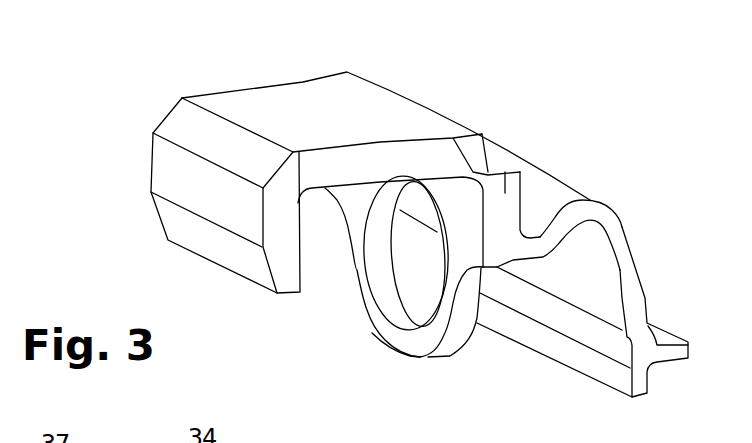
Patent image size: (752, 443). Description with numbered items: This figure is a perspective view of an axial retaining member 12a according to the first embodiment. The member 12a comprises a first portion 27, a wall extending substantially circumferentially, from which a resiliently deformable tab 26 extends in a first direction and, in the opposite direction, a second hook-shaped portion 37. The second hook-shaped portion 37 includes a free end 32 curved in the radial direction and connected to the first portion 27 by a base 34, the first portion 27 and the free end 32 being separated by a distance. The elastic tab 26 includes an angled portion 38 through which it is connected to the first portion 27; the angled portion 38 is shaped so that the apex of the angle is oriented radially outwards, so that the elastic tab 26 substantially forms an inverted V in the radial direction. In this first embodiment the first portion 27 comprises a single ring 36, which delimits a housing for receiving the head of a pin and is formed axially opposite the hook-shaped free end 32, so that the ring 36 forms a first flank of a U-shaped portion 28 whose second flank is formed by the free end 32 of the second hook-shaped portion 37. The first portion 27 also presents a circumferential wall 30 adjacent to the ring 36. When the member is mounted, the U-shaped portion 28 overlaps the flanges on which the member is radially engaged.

The member 12a is at (563, 112).
The resiliently deformable tab 26 is at (638, 270).
The first portion 27 is at (485, 150).
The U-shaped portion 28 is at (323, 264).
The circumferential wall 30 is at (505, 197).
The free end 32 is at (182, 175).
The base 34 is at (258, 115).
The ring 36 is at (433, 337).
The second hook-shaped portion 37 is at (163, 108).
The angled portion 38 is at (588, 200).